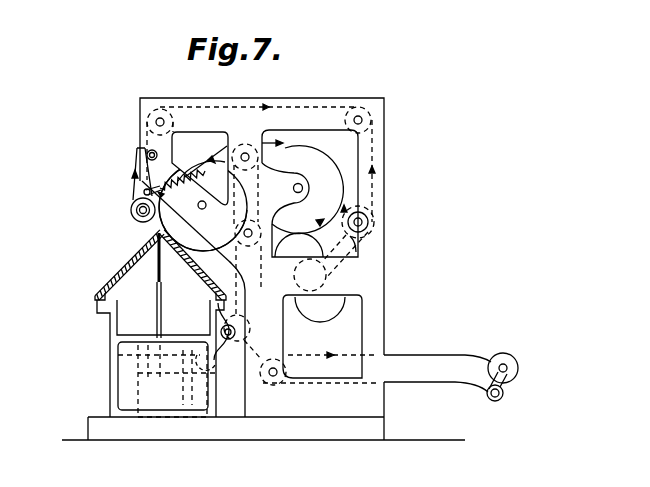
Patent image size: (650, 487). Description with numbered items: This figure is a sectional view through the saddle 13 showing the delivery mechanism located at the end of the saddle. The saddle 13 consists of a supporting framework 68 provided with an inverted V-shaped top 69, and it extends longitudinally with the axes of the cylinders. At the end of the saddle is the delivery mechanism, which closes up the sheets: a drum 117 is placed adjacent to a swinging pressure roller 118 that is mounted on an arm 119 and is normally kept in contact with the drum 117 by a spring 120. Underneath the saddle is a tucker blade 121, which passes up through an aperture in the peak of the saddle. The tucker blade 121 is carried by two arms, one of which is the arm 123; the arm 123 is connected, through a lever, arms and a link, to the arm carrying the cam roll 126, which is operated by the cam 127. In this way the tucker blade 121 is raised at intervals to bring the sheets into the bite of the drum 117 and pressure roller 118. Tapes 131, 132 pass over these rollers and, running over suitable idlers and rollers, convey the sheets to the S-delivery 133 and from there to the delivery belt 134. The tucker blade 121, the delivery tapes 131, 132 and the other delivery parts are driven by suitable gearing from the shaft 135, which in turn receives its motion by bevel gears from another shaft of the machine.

The saddle 13 is at (97, 304).
The supporting framework 68 is at (117, 338).
The inverted V-shaped top 69 is at (115, 282).
The drum 117 is at (199, 209).
The swinging pressure roller 118 is at (131, 210).
The arm 119 is at (137, 183).
The spring 120 is at (179, 169).
The tucker blade 121 is at (150, 250).
The arm 123 is at (157, 290).
The cam roll 126 is at (160, 338).
The cam 127 is at (148, 385).
The tape 131 is at (275, 103).
The tape 132 is at (285, 140).
The S-delivery 133 is at (322, 336).
The delivery belt 134 is at (435, 352).
The shaft 135 is at (235, 332).